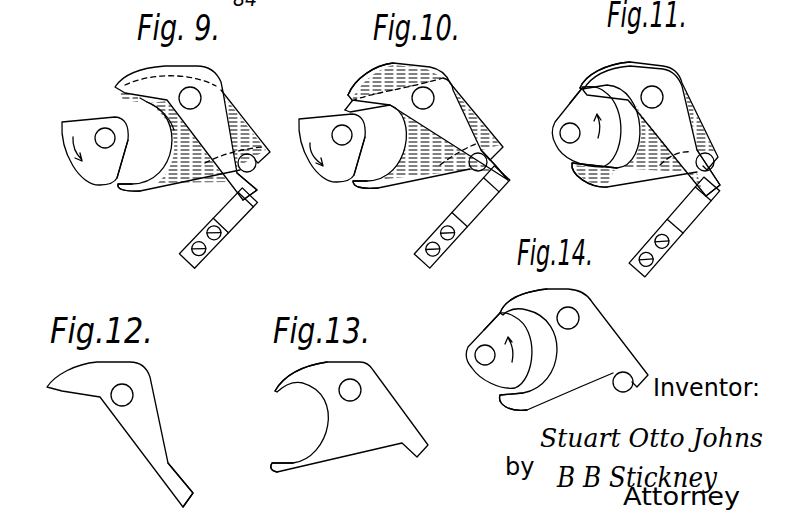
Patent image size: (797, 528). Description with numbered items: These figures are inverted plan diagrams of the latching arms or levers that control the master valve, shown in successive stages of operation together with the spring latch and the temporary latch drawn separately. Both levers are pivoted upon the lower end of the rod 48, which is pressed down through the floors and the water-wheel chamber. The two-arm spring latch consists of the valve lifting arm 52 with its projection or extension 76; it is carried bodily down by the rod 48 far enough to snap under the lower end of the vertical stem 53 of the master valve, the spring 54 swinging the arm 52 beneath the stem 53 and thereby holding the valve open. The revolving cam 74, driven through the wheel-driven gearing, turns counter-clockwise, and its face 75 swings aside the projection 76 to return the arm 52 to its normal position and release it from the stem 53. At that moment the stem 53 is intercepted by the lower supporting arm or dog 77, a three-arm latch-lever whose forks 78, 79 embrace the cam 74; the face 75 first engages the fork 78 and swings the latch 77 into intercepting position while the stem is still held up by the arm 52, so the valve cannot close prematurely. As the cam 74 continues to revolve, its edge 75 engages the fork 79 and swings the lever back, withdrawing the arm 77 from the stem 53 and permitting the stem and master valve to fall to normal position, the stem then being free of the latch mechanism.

In FIG. 9, the rod 48 is at (190, 100).
In FIG. 10, the rod 48 is at (423, 100).
In FIG. 11, the rod 48 is at (652, 99).
In FIG. 9, the valve lifting arm 52 is at (251, 193).
In FIG. 10, the valve lifting arm 52 is at (501, 174).
In FIG. 11, the valve lifting arm 52 is at (716, 178).
In FIG. 12, the valve lifting arm 52 is at (163, 473).
In FIG. 9, the vertical stem 53 is at (249, 160).
In FIG. 10, the vertical stem 53 is at (490, 158).
In FIG. 11, the vertical stem 53 is at (711, 160).
In FIG. 14, the vertical stem 53 is at (618, 388).
In FIG. 9, the spring 54 is at (233, 218).
In FIG. 10, the spring 54 is at (472, 208).
In FIG. 11, the spring 54 is at (691, 213).
In FIG. 9, the cam device 74 is at (62, 143).
In FIG. 10, the cam device 74 is at (314, 169).
In FIG. 11, the cam device 74 is at (565, 120).
In FIG. 14, the cam device 74 is at (468, 350).
In FIG. 9, the face of the cam 75 is at (122, 174).
In FIG. 10, the face of the cam 75 is at (356, 175).
In FIG. 11, the face of the cam 75 is at (577, 100).
In FIG. 14, the face of the cam 75 is at (500, 318).
In FIG. 9, the projection 76 is at (123, 80).
In FIG. 10, the projection 76 is at (362, 103).
In FIG. 11, the projection 76 is at (623, 73).
In FIG. 12, the projection 76 is at (68, 378).
In FIG. 9, the lower supporting arm 77 is at (270, 157).
In FIG. 10, the lower supporting arm 77 is at (493, 143).
In FIG. 11, the lower supporting arm 77 is at (703, 150).
In FIG. 13, the lower supporting arm 77 is at (417, 443).
In FIG. 14, the lower supporting arm 77 is at (640, 372).
In FIG. 9, the fork 78 is at (134, 193).
In FIG. 10, the fork 78 is at (380, 189).
In FIG. 11, the fork 78 is at (616, 181).
In FIG. 13, the fork 78 is at (295, 470).
In FIG. 14, the fork 78 is at (503, 412).
In FIG. 9, the fork 79 is at (139, 97).
In FIG. 10, the fork 79 is at (352, 97).
In FIG. 11, the fork 79 is at (586, 80).
In FIG. 13, the fork 79 is at (293, 378).
In FIG. 14, the fork 79 is at (505, 308).